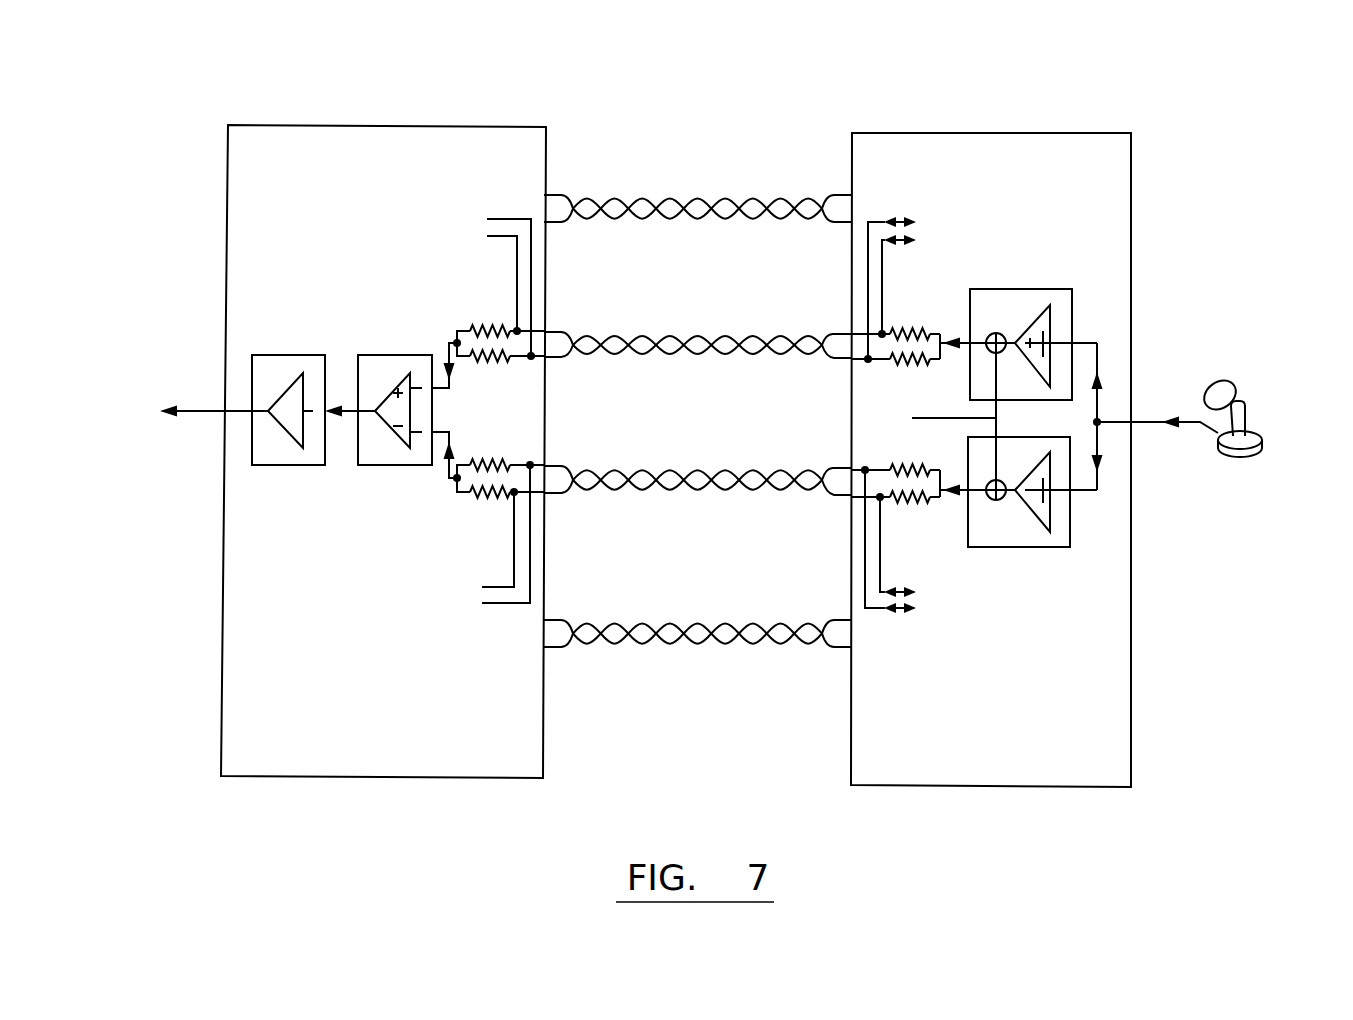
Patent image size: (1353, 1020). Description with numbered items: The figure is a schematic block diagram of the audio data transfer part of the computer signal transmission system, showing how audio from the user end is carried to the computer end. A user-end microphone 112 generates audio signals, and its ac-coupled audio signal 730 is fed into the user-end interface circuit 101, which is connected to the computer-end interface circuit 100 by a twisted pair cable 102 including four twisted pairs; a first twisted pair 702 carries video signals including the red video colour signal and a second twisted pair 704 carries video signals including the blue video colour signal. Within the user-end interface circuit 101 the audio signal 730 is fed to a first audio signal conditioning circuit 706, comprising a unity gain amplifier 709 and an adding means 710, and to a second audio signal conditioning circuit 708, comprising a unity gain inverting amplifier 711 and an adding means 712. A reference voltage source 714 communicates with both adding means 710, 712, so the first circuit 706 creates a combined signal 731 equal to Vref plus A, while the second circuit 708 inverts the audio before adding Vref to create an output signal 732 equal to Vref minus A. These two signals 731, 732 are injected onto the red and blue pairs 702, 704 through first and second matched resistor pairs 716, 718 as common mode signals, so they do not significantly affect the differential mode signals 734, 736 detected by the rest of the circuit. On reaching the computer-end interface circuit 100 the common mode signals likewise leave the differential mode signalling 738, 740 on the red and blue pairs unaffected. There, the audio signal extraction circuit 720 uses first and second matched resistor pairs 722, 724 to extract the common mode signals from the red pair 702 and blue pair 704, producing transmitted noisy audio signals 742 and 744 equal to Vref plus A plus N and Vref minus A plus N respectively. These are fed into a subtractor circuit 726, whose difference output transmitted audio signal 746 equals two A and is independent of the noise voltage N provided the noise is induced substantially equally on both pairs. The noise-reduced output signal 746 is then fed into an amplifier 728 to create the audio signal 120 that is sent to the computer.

The computer-end interface circuit 100 is at (366, 125).
The user-end interface circuit 101 is at (1002, 133).
The twisted pair cable 102 is at (688, 208).
The microphone 112 is at (1247, 405).
The audio signal 120 is at (200, 412).
The first twisted pair 702 is at (684, 336).
The second twisted pair 704 is at (700, 495).
The first audio signal conditioning circuit 706 is at (1025, 289).
The second audio signal conditioning circuit 708 is at (1020, 550).
The unity gain amplifier 709 is at (1053, 288).
The adding means 710 is at (990, 330).
The unity gain inverting amplifier 711 is at (1055, 548).
The adding means 712 is at (993, 505).
The reference voltage source 714 is at (913, 418).
The first matched resistor pair 716 is at (908, 327).
The second matched resistor pair 718 is at (905, 505).
The audio signal extraction circuit 720 is at (393, 337).
The first matched resistor pair 722 is at (488, 323).
The second matched resistor pair 724 is at (490, 500).
The subtractor circuit 726 is at (386, 468).
The amplifier 728 is at (280, 468).
The ac-coupled audio signal 730 is at (1147, 425).
The combined signal 731 is at (962, 352).
The output signal 732 is at (960, 480).
The differential mode signals 734 is at (898, 218).
The differential mode signals 736 is at (900, 615).
The differential mode signalling 738 is at (503, 216).
The differential mode signalling 740 is at (493, 607).
The transmitted noisy audio signal 742 is at (453, 378).
The transmitted noisy audio signal 744 is at (453, 447).
The output transmitted audio signal 746 is at (345, 393).